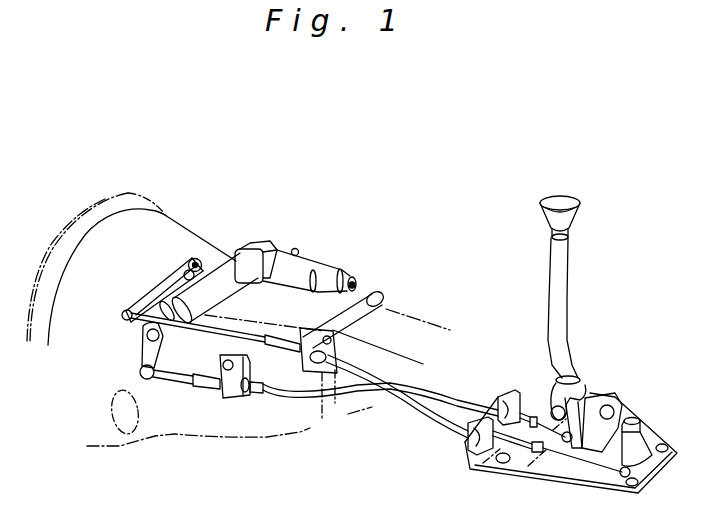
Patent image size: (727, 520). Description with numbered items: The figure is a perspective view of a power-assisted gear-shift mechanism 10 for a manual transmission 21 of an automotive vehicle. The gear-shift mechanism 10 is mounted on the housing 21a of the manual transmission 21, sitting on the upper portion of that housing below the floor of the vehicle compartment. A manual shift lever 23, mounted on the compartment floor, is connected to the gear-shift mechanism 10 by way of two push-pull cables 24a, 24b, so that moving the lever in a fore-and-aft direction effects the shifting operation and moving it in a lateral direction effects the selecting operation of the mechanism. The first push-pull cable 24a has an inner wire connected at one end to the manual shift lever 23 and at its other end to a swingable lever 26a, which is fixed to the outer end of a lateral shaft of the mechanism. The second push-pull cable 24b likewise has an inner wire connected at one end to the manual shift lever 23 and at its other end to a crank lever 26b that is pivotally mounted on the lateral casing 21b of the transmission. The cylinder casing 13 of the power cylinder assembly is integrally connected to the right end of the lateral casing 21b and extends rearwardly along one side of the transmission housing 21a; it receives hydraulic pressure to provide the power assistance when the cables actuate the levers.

The power-assisted gear-shift mechanism 10 is at (295, 242).
The cylinder casing 13 is at (314, 258).
The manual transmission 21 is at (240, 440).
The housing 21a is at (362, 290).
The lateral casing 21b is at (212, 277).
The manual shift lever 23 is at (559, 288).
The first push-pull cable 24a is at (290, 401).
The second push-pull cable 24b is at (427, 417).
The swingable lever 26a is at (143, 355).
The crank lever 26b is at (155, 292).